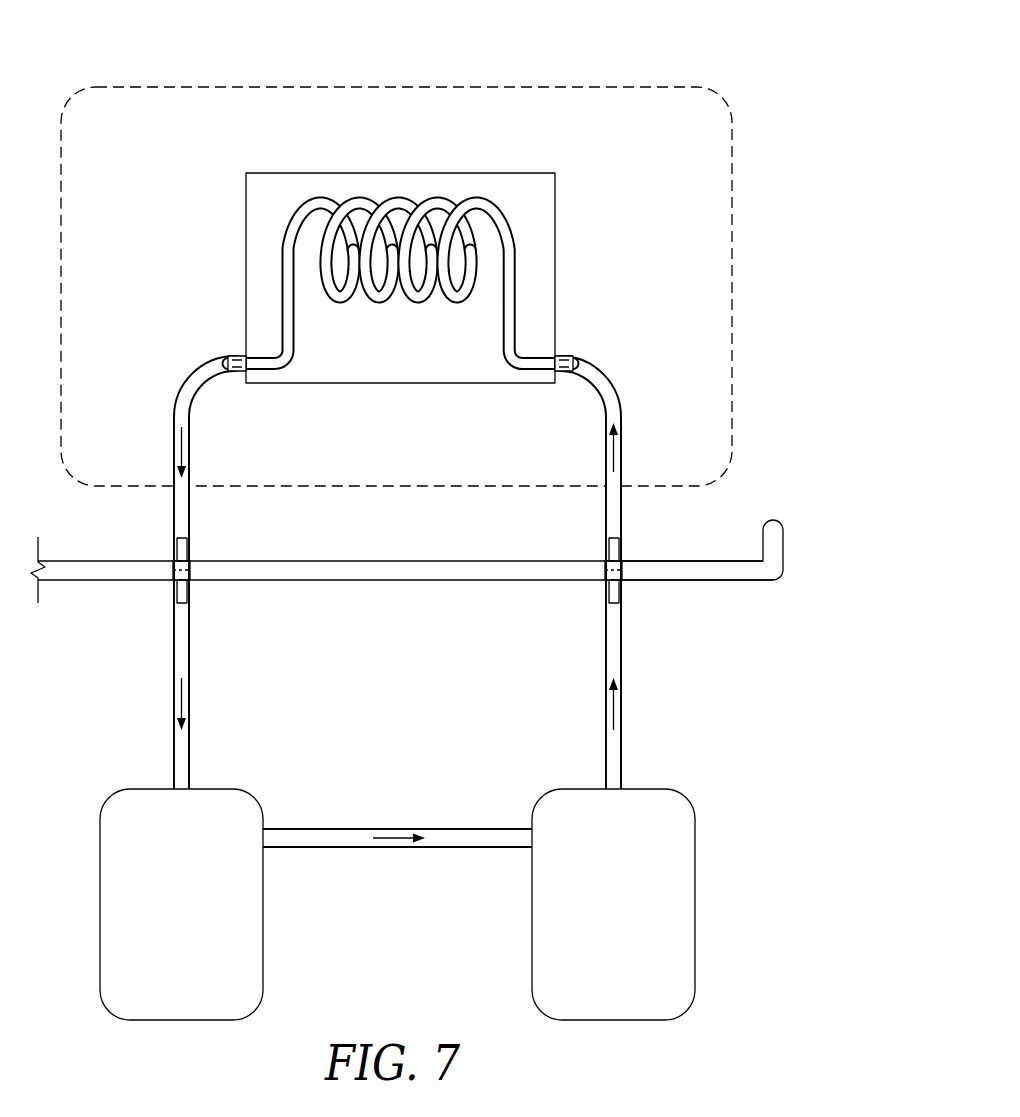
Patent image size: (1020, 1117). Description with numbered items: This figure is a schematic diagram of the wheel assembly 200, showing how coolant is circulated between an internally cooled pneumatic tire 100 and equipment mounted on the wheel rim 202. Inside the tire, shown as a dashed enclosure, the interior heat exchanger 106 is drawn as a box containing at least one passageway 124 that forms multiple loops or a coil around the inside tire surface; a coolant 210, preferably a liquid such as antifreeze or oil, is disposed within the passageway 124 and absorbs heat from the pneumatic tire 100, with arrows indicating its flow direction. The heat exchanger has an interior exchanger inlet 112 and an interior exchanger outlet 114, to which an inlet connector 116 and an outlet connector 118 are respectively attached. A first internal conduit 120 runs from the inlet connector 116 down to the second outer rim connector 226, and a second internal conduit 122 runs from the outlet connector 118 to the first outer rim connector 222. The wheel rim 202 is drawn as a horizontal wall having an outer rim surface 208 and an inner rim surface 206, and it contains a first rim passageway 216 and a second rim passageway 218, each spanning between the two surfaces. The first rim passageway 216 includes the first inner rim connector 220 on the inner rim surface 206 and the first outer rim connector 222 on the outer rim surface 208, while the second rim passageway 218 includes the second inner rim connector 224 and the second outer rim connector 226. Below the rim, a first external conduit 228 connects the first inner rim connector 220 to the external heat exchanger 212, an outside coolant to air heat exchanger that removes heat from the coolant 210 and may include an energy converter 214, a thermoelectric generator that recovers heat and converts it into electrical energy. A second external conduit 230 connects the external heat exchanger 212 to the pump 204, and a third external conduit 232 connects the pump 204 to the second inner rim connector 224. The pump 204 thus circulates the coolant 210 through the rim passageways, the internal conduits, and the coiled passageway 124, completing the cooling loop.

The pneumatic tire 100 is at (472, 87).
The interior heat exchanger 106 is at (406, 251).
The interior exchanger inlet 112 is at (551, 380).
The interior exchanger outlet 114 is at (249, 380).
The inlet connector 116 is at (562, 355).
The outlet connector 118 is at (240, 355).
The first internal conduit 120 is at (622, 458).
The second internal conduit 122 is at (173, 411).
The passageway 124 is at (478, 200).
The wheel assembly 200 is at (812, 60).
The wheel rim 202 is at (778, 533).
The pump 204 is at (640, 919).
The inner rim surface 206 is at (700, 581).
The outer rim surface 208 is at (700, 561).
The coolant 210 is at (184, 447).
The external heat exchanger 212 is at (181, 904).
The energy converter 214 is at (230, 932).
The first rim passageway 216 is at (188, 571).
The second rim passageway 218 is at (607, 575).
The first inner rim connector 220 is at (177, 592).
The first outer rim connector 222 is at (177, 552).
The second inner rim connector 224 is at (622, 595).
The second outer rim connector 226 is at (622, 548).
The first external conduit 228 is at (173, 725).
The second external conduit 230 is at (360, 848).
The third external conduit 232 is at (622, 725).